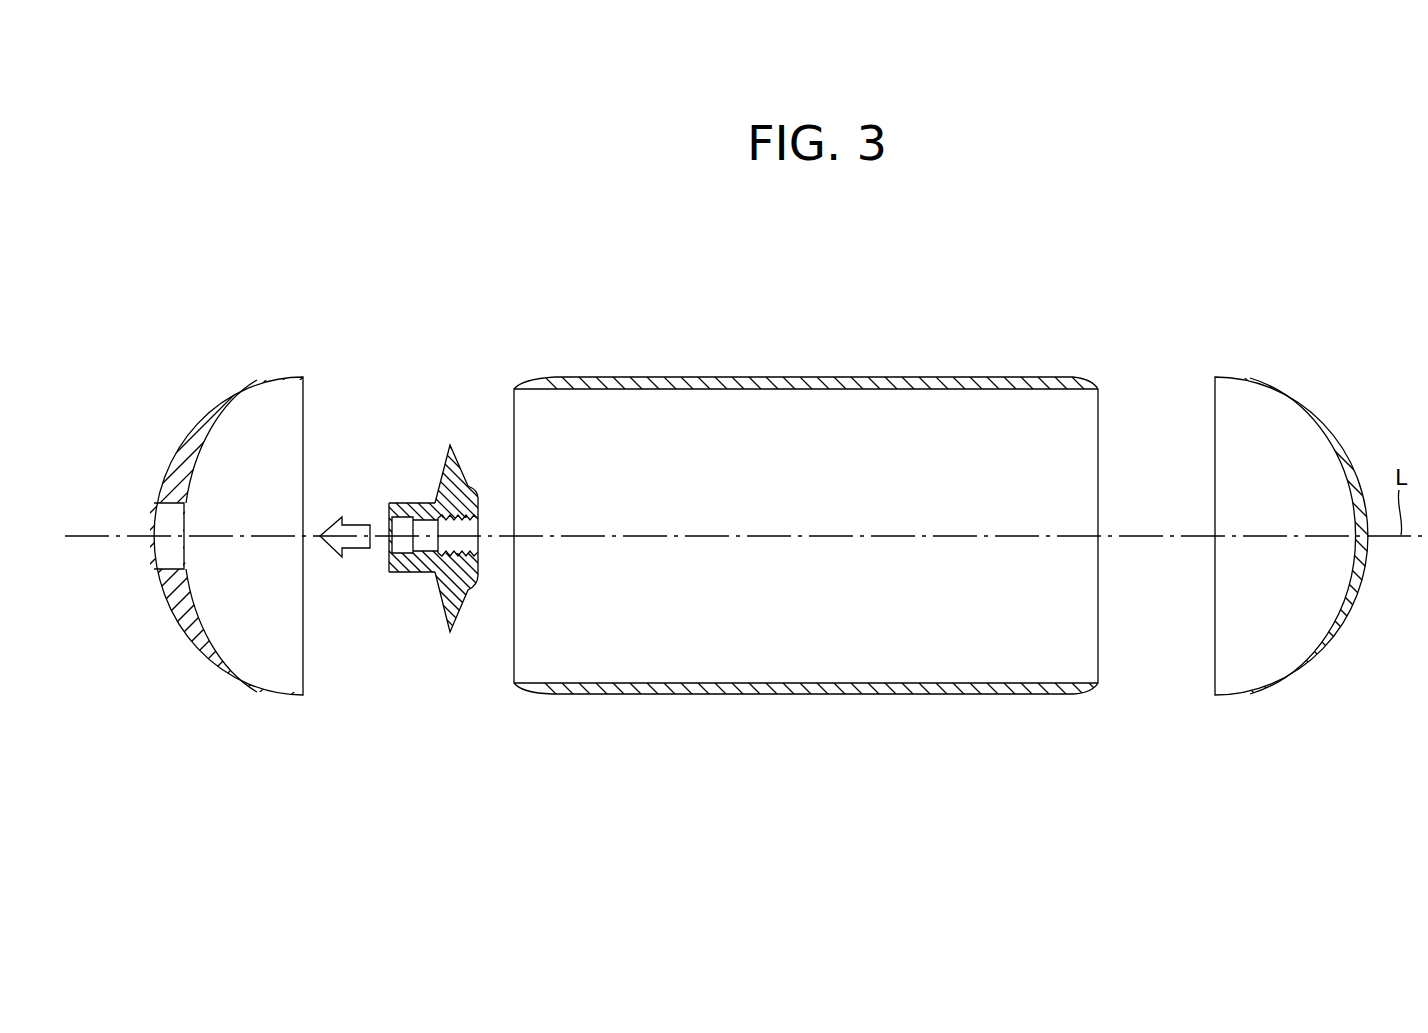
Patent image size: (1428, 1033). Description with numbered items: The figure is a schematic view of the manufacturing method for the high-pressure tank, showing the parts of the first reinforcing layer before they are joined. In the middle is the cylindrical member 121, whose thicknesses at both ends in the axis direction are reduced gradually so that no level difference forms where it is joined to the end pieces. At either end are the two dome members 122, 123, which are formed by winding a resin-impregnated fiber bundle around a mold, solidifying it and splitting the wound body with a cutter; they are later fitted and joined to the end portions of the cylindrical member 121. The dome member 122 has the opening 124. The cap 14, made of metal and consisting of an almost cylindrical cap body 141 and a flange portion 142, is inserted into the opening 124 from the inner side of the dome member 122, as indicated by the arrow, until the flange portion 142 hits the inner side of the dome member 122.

The cap 14 is at (438, 597).
The cylindrical member 121 is at (823, 382).
The dome member 122 is at (193, 425).
The dome member 123 is at (1327, 427).
The opening 124 is at (158, 511).
The cap body 141 is at (417, 577).
The flange portion 142 is at (452, 593).